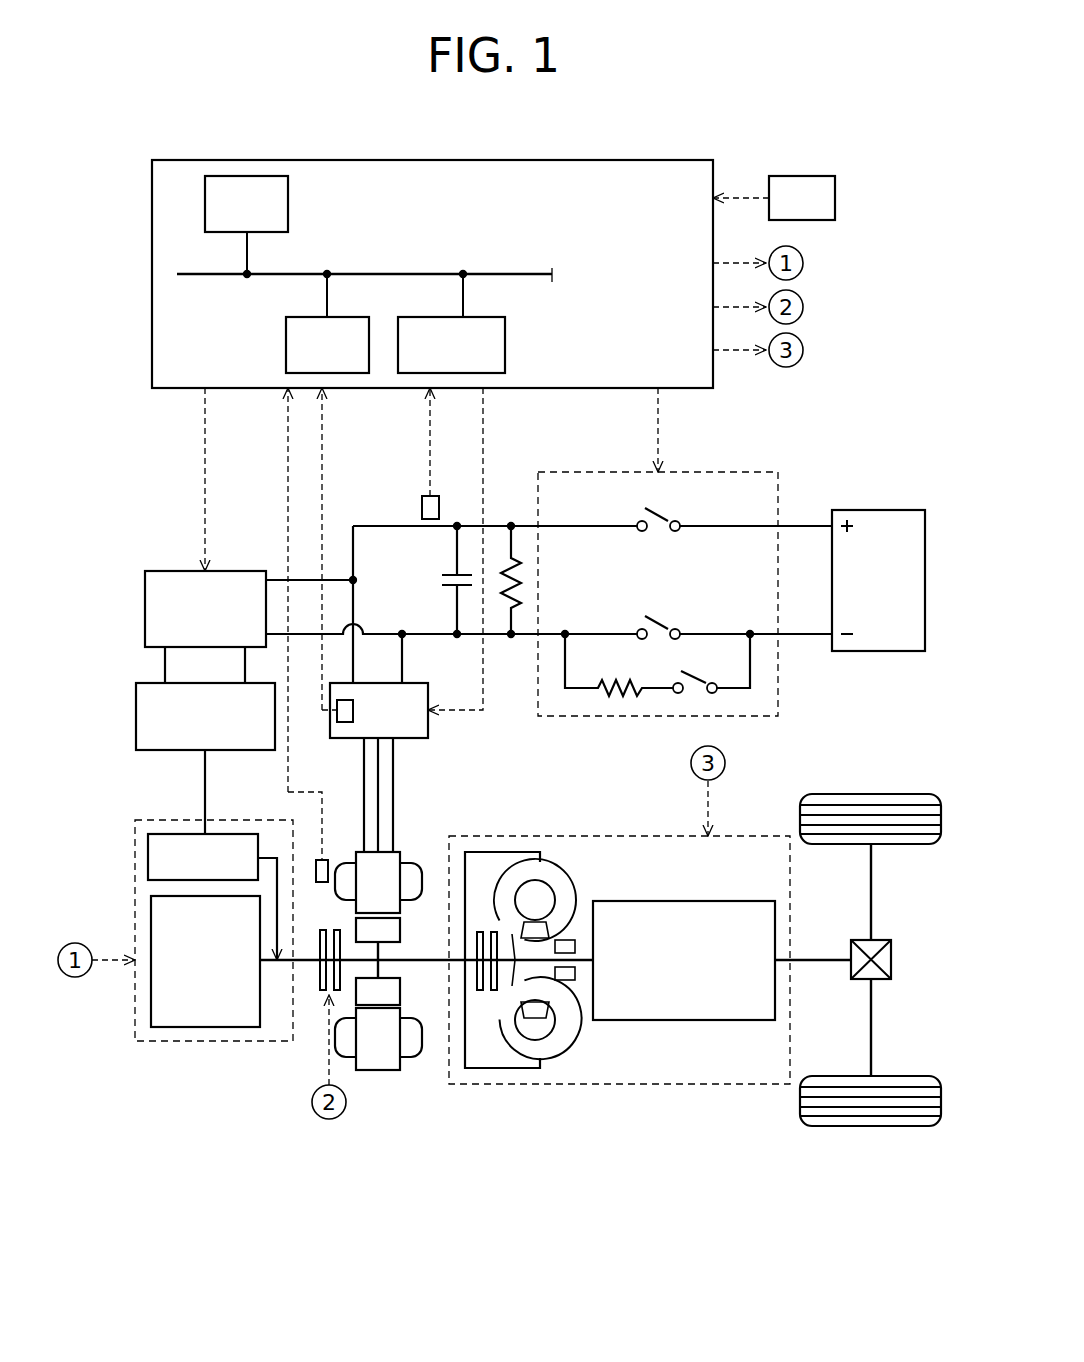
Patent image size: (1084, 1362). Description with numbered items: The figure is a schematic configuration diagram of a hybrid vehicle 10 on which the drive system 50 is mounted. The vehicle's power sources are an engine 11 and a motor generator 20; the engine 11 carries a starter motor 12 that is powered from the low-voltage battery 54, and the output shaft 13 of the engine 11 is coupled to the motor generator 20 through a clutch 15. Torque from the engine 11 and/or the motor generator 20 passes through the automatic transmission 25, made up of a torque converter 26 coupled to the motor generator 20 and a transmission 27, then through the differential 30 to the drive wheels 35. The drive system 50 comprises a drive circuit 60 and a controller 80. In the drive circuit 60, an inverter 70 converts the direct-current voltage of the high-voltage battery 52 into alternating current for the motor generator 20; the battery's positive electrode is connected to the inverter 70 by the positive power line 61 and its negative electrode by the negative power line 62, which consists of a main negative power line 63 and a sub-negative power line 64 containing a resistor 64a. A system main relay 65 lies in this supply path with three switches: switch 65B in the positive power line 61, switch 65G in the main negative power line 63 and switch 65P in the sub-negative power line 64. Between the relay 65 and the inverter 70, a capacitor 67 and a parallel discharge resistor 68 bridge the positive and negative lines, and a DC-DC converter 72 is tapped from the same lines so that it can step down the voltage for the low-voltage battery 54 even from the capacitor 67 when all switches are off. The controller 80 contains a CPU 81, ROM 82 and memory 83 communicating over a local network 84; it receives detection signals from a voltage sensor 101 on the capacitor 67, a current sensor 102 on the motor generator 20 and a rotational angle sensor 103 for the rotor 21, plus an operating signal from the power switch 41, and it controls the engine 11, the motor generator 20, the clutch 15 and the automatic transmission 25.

The hybrid vehicle 10 is at (184, 973).
The engine 11 is at (151, 998).
The starter motor 12 is at (148, 857).
The output shaft 13 is at (267, 963).
The clutch 15 is at (318, 976).
The motor generator 20 is at (391, 935).
The rotor 21 is at (397, 992).
The automatic transmission 25 is at (619, 1017).
The torque converter 26 is at (523, 1069).
The transmission 27 is at (658, 1021).
The differential 30 is at (891, 958).
The drive wheels 35 is at (912, 793).
The power switch 41 is at (805, 176).
The drive system 50 is at (822, 408).
The high-voltage battery 52 is at (888, 510).
The low-voltage battery 54 is at (136, 714).
The drive circuit 60 is at (564, 622).
The positive power line 61 is at (705, 526).
The negative power line 62 is at (549, 715).
The main negative power line 63 is at (523, 640).
The sub-negative power line 64 is at (585, 690).
The resistor 64a is at (642, 742).
The system main relay 65 is at (660, 577).
The switch 65B is at (665, 536).
The switch 65G is at (632, 614).
The switch 65P is at (700, 672).
The capacitor 67 is at (430, 571).
The discharge resistor 68 is at (522, 550).
The inverter 70 is at (432, 739).
The DC-DC converter 72 is at (145, 606).
The controller 80 is at (623, 160).
The CPU 81 is at (288, 201).
The ROM 82 is at (286, 343).
The memory 83 is at (505, 344).
The local network 84 is at (492, 272).
The voltage sensor 101 is at (422, 508).
The current sensor 102 is at (345, 723).
The rotational angle sensor 103 is at (313, 860).